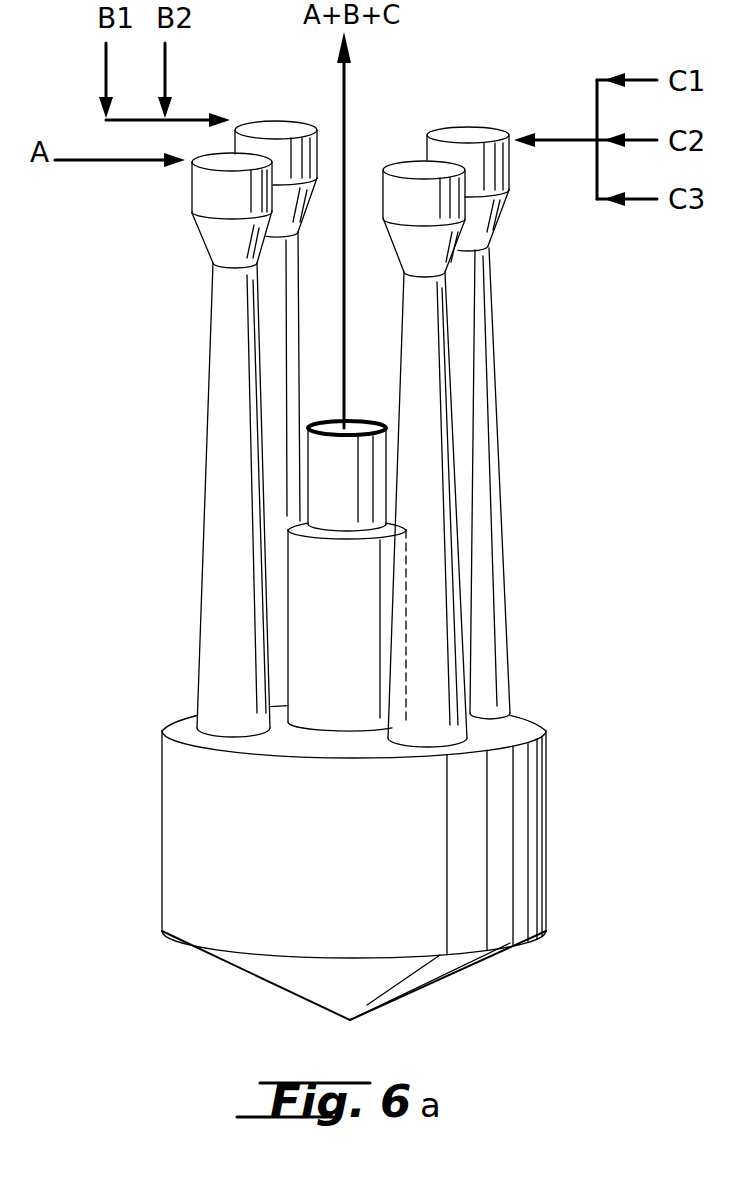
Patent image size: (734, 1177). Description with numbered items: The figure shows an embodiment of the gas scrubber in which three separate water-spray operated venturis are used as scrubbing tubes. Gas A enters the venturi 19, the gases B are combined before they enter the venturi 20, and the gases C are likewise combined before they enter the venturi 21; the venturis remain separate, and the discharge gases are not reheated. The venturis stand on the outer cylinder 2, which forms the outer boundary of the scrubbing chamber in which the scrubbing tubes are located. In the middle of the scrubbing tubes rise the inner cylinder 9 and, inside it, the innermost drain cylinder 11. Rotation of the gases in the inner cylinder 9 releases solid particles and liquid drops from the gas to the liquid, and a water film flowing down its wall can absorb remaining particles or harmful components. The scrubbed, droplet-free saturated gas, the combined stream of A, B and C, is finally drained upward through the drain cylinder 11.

The outer cylinder 2 is at (518, 803).
The inner cylinder 9 is at (368, 613).
The drain cylinder 11 is at (365, 477).
The venturi 19 is at (202, 200).
The venturi 20 is at (272, 127).
The venturi 21 is at (487, 207).